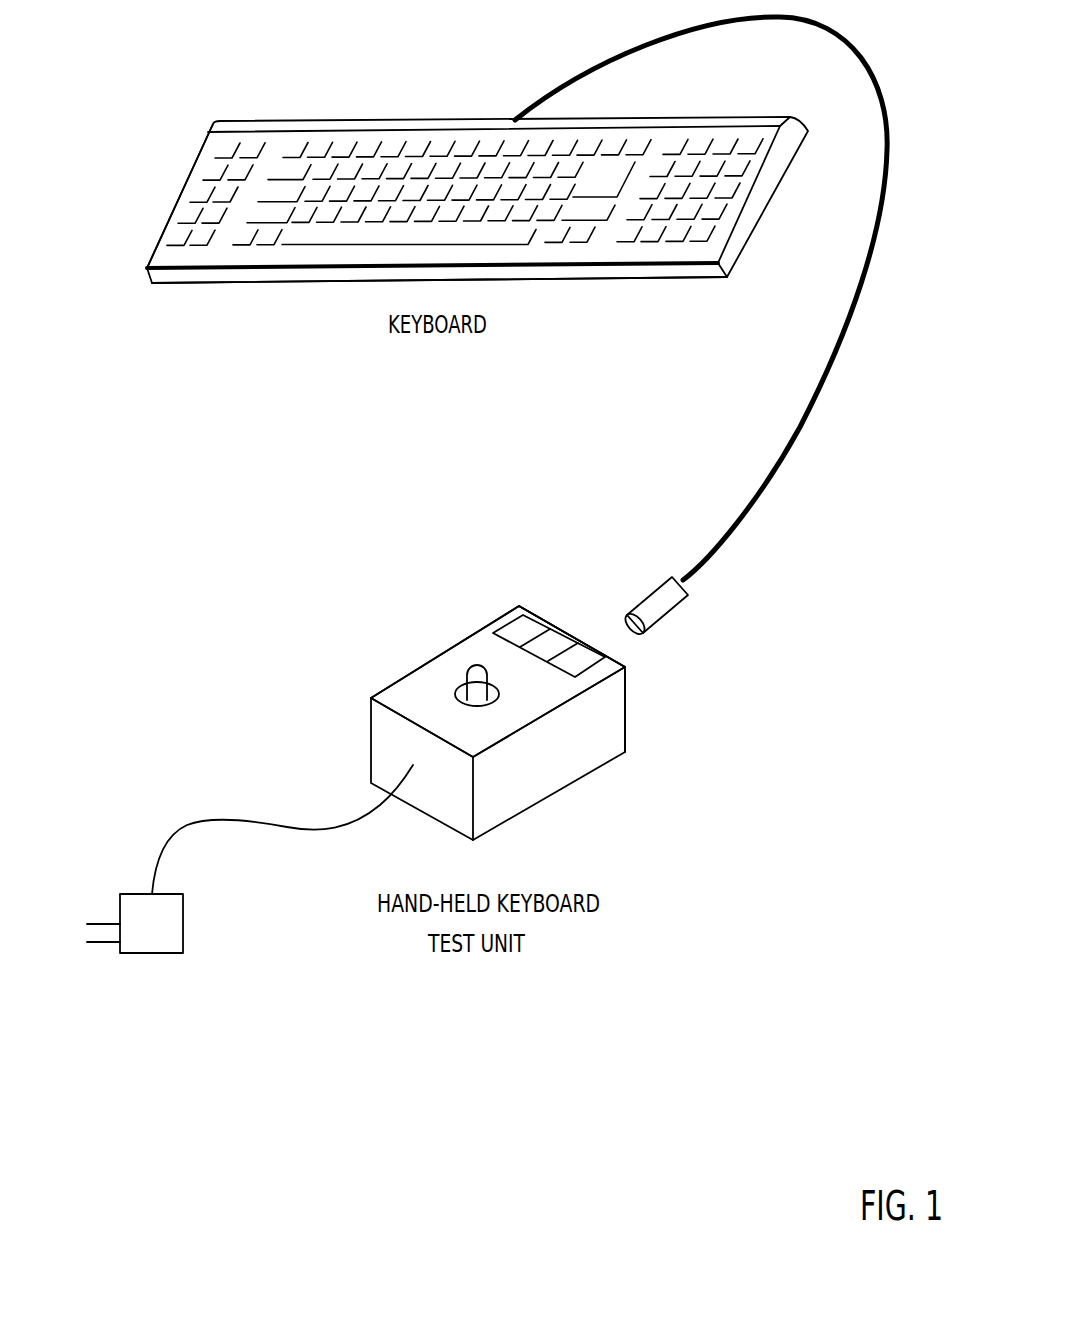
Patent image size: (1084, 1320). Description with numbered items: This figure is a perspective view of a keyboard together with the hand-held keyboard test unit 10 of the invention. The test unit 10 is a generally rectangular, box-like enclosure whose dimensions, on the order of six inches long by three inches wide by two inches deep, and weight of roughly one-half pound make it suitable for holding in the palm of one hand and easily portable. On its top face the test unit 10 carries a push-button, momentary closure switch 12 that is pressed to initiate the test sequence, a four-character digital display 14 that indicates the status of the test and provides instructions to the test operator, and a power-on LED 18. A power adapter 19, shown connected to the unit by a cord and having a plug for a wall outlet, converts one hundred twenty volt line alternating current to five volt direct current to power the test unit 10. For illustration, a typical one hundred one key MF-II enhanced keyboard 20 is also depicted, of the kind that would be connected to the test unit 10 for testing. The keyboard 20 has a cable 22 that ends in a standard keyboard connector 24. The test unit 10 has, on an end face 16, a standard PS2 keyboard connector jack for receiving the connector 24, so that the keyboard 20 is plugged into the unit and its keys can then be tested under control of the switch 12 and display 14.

The hand-held keyboard test unit 10 is at (420, 638).
The push-button momentary closure switch 12 is at (490, 673).
The four-character digital display 14 is at (593, 650).
The end face 16 is at (547, 617).
The power-on LED 18 is at (432, 692).
The power adapter 19 is at (137, 894).
The keyboard 20 is at (357, 122).
The cable 22 is at (833, 340).
The keyboard connector 24 is at (685, 600).